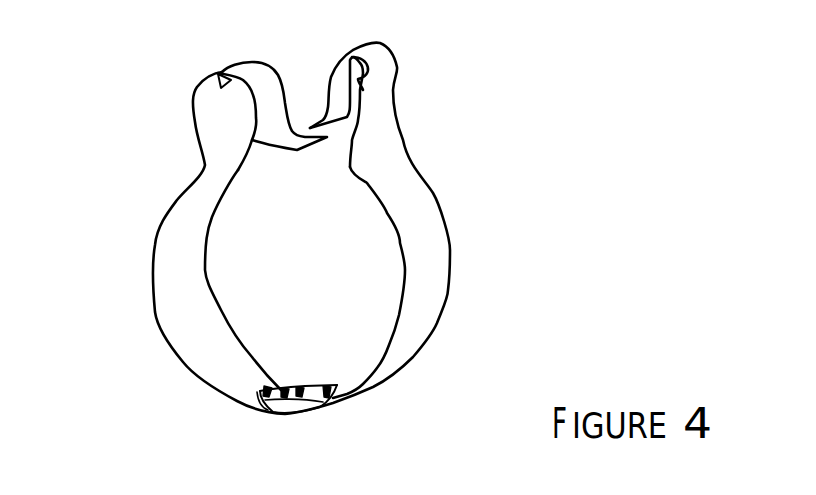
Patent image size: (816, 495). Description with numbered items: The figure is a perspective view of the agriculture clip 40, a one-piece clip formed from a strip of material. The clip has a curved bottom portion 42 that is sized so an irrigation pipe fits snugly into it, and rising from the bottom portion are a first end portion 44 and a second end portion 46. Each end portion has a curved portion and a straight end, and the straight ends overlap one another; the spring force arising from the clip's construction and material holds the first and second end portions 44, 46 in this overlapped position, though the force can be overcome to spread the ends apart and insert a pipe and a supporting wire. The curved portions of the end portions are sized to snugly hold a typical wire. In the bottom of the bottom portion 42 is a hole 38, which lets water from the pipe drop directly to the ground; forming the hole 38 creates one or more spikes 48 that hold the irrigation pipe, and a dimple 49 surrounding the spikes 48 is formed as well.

The agriculture clip 40 is at (491, 69).
The bottom portion 42 is at (167, 265).
The first end portion 44 is at (247, 62).
The second end portion 46 is at (375, 43).
The hole 38 is at (307, 410).
The spikes 48 is at (270, 388).
The dimple 49 is at (258, 394).